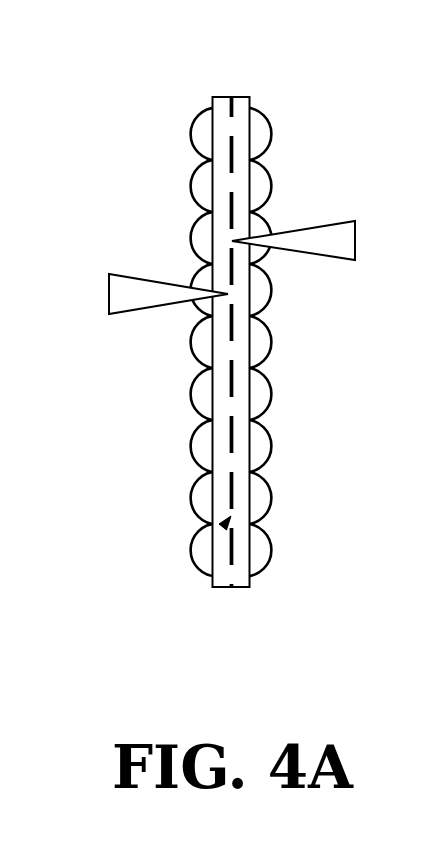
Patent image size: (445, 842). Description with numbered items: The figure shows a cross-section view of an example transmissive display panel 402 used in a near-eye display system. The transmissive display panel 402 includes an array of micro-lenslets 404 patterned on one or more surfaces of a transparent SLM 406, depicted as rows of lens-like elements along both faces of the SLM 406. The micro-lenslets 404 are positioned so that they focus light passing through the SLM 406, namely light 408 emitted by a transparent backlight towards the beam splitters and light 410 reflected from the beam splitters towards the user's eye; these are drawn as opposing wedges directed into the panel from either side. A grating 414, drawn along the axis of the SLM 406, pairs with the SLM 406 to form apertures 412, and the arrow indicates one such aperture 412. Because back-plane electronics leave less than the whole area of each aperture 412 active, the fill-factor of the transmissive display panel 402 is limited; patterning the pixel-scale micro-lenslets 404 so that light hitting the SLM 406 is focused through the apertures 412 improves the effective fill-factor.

The transmissive display panel 402 is at (210, 96).
The micro-lenslets 404 is at (208, 130).
The transparent SLM 406 is at (240, 110).
The light 408 is at (345, 233).
The light 410 is at (117, 287).
The aperture 412 is at (225, 521).
The grating 414 is at (230, 443).